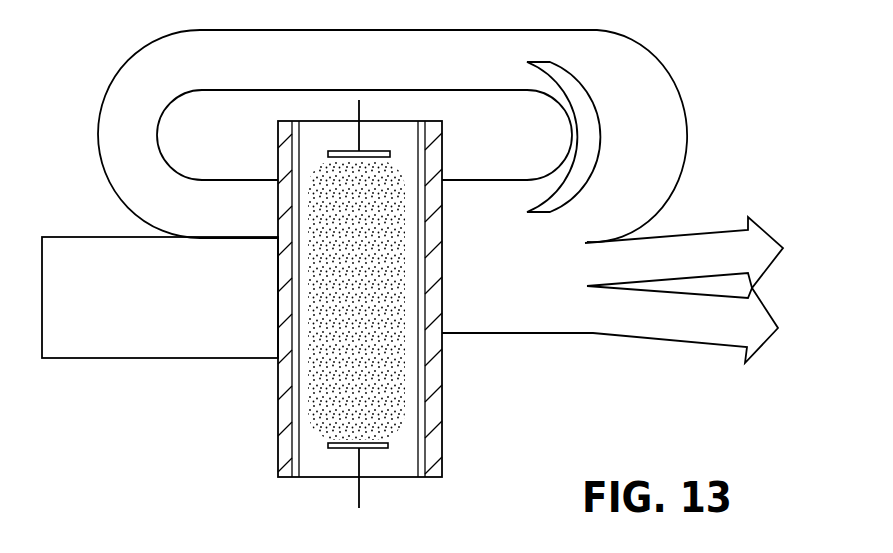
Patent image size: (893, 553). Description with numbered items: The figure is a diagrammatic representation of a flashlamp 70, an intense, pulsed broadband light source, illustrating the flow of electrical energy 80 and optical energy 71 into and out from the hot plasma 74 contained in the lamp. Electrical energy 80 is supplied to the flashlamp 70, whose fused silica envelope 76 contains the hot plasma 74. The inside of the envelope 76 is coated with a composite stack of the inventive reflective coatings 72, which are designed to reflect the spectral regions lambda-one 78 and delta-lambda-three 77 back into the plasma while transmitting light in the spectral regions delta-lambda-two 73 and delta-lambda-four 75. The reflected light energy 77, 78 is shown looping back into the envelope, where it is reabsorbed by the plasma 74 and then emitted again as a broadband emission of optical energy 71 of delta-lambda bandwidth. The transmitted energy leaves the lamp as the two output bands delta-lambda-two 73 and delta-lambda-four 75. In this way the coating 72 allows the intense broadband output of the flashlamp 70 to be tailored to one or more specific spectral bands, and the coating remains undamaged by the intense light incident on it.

The flashlamp 70 is at (483, 425).
The optical energy 71 is at (488, 317).
The reflective coatings 72 is at (306, 450).
The spectral region delta-lambda-2 73 is at (722, 230).
The hot plasma 74 is at (378, 372).
The spectral region delta-lambda-4 75 is at (712, 347).
The fused silica envelope 76 is at (278, 377).
The spectral region delta-lambda-3 77 is at (675, 82).
The spectral region lambda-1 78 is at (568, 117).
The electrical energy 80 is at (192, 337).